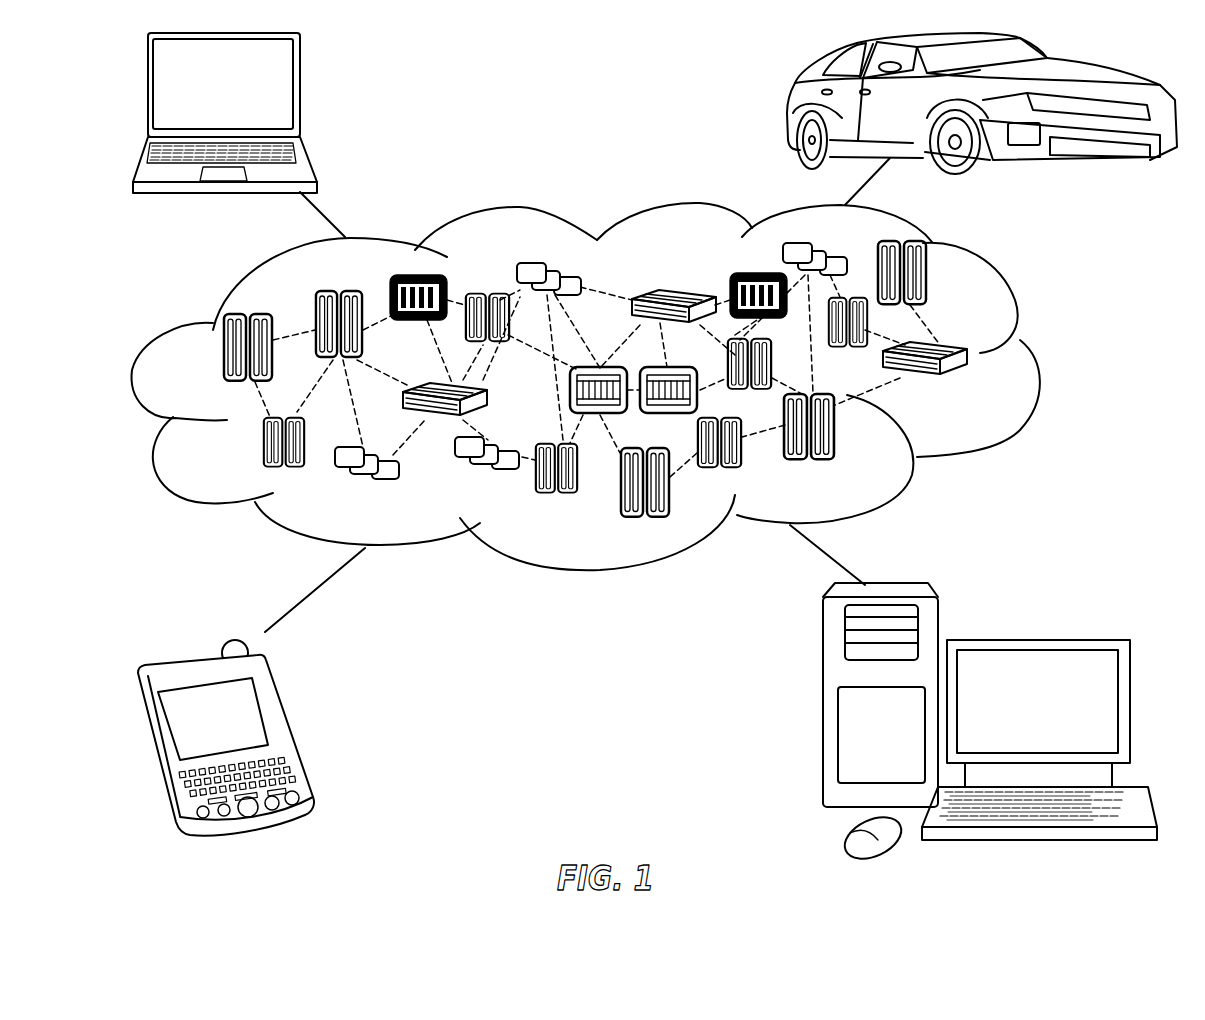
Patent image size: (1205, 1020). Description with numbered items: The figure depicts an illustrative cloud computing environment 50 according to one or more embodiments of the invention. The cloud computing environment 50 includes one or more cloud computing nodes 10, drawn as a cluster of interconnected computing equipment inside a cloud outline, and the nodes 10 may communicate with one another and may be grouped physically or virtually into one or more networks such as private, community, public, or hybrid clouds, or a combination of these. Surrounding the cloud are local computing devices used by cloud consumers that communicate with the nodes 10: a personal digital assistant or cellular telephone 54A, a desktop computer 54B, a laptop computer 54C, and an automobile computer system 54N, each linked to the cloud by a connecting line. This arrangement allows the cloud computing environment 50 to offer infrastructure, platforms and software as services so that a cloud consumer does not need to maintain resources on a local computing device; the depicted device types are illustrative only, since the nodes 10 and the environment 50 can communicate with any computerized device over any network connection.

The cloud computing nodes 10 is at (975, 387).
The cloud computing environment 50 is at (1037, 360).
The personal digital assistant (PDA) or cellular telephone 54A is at (290, 730).
The desktop computer 54B is at (1035, 637).
The laptop computer 54C is at (300, 93).
The automobile computer system 54N is at (790, 105).